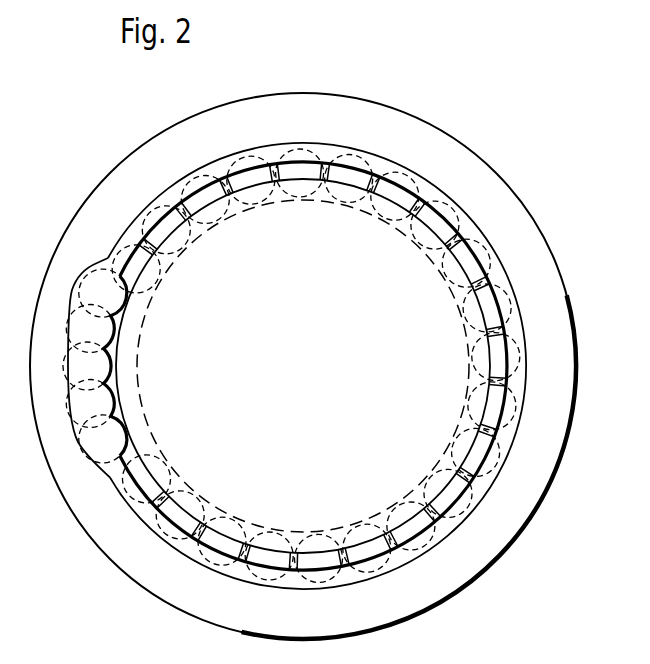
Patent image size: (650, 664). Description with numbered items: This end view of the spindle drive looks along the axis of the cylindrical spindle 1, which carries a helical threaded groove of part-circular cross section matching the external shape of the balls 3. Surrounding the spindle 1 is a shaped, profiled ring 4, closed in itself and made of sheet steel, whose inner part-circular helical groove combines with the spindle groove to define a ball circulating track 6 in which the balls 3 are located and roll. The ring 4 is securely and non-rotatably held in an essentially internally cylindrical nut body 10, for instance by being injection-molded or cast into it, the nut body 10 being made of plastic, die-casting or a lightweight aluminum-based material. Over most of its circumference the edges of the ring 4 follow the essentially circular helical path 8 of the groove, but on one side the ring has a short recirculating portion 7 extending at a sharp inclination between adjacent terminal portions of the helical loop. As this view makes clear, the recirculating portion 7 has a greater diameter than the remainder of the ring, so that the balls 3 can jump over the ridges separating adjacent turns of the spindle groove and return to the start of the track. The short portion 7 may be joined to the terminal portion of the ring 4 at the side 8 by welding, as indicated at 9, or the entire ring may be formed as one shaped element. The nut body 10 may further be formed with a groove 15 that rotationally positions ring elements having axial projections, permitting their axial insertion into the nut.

The spindle 1 is at (258, 313).
The ball 3 is at (397, 233).
The profiled ring 4 is at (452, 538).
The ball circulating track 6 is at (459, 236).
The recirculating portion 7 is at (73, 425).
The circular helical path 8 is at (480, 430).
The weld 9 is at (123, 404).
The nut body 10 is at (453, 162).
The groove 15 is at (98, 262).